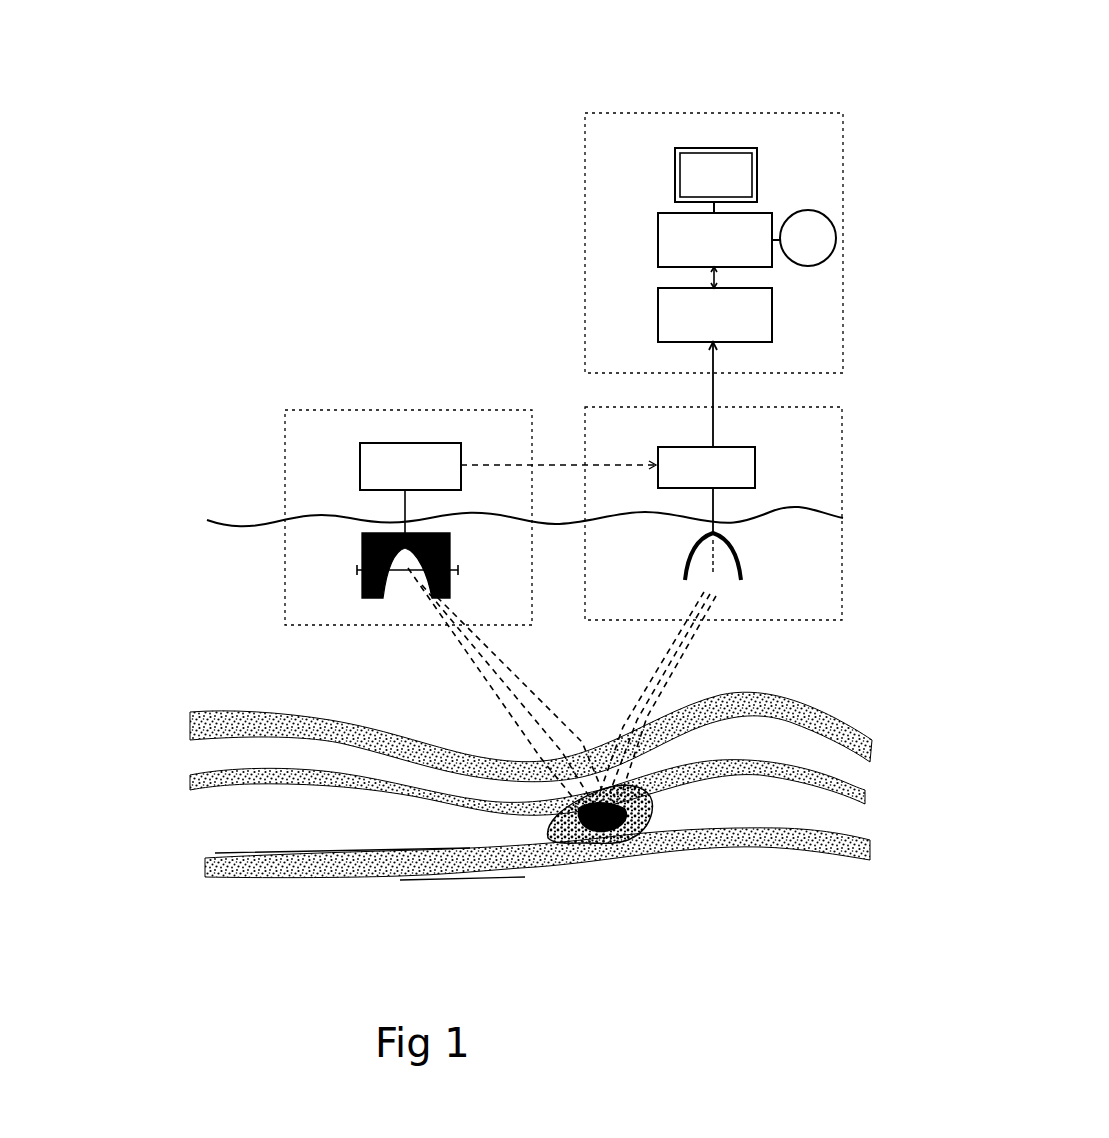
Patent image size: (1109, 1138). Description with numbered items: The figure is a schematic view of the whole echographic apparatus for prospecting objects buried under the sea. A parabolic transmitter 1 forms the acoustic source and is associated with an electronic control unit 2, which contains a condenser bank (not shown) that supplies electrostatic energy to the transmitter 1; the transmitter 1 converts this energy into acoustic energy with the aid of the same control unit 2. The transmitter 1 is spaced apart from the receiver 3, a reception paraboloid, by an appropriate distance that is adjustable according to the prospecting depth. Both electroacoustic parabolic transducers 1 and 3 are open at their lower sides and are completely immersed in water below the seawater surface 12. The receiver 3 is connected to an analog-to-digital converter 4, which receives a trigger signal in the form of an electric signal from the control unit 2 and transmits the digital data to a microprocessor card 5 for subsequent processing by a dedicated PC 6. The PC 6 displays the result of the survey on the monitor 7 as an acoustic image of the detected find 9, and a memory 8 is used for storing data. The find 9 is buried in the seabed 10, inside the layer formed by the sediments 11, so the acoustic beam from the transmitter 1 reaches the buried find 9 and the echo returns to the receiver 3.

The parabolic transmitter 1 is at (365, 545).
The electronic control unit 2 is at (392, 443).
The receiver 3 is at (738, 563).
The analog-to-digital converter 4 is at (757, 460).
The microprocessor card 5 is at (760, 323).
The dedicated PC 6 is at (658, 240).
The monitor 7 is at (704, 148).
The memory 8 is at (818, 227).
The find 9 is at (633, 825).
The seabed 10 is at (228, 710).
The sediments 11 is at (530, 820).
The seawater surface 12 is at (228, 517).